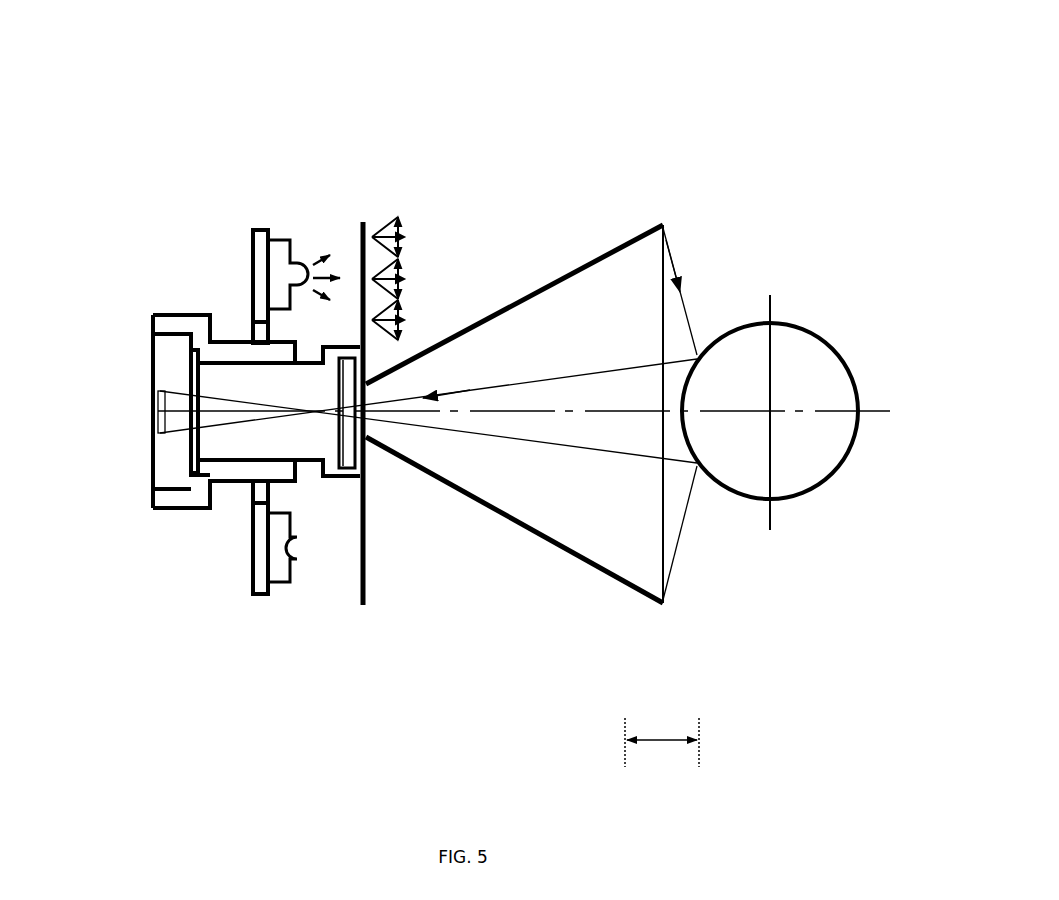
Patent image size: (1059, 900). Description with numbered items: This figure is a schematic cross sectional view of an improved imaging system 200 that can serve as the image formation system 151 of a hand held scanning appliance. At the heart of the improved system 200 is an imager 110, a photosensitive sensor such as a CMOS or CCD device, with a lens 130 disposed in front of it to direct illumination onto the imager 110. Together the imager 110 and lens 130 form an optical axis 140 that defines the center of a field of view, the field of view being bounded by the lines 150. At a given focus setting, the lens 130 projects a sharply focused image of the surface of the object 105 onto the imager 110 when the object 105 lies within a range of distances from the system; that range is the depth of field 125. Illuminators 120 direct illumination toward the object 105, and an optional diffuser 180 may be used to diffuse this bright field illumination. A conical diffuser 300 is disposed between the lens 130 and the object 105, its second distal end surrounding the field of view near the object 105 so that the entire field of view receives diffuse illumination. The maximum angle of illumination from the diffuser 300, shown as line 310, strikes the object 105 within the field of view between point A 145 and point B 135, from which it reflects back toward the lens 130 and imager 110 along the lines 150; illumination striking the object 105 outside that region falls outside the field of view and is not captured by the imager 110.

The object 105 is at (800, 324).
The imager 110 is at (153, 410).
The illuminators 120 is at (282, 245).
The depth of field 125 is at (660, 740).
The lens 130 is at (340, 480).
The point B 135 is at (696, 352).
The optical axis 140 is at (553, 411).
The point A 145 is at (697, 470).
The lines 150 is at (477, 392).
The image formation system 151 is at (630, 70).
The diffuser 180 is at (366, 226).
The improved imaging system 200 is at (118, 180).
The conical diffuser 300 is at (542, 285).
The line 310 is at (675, 252).